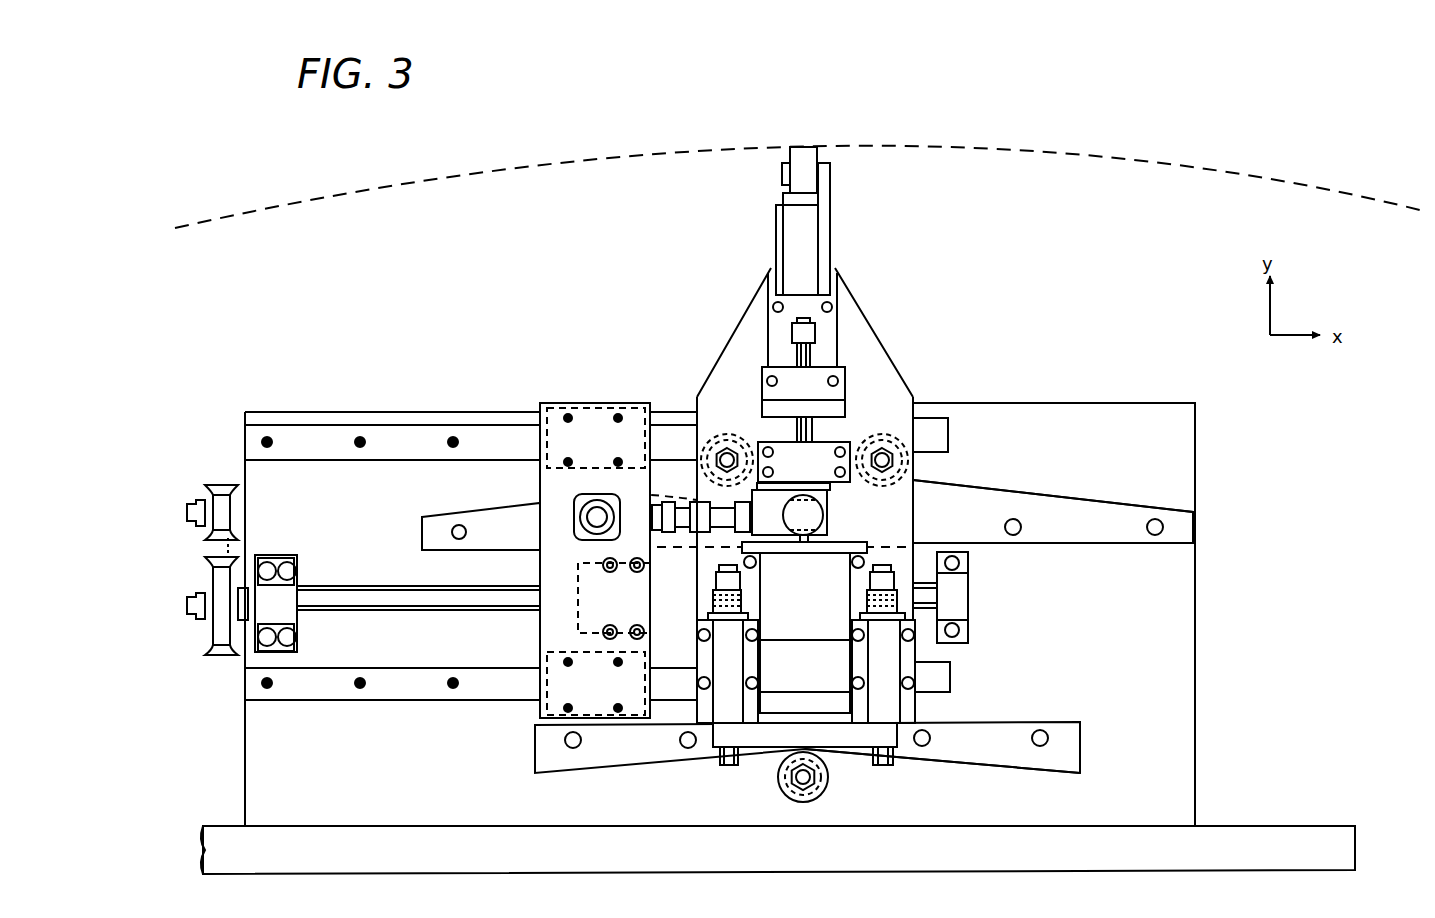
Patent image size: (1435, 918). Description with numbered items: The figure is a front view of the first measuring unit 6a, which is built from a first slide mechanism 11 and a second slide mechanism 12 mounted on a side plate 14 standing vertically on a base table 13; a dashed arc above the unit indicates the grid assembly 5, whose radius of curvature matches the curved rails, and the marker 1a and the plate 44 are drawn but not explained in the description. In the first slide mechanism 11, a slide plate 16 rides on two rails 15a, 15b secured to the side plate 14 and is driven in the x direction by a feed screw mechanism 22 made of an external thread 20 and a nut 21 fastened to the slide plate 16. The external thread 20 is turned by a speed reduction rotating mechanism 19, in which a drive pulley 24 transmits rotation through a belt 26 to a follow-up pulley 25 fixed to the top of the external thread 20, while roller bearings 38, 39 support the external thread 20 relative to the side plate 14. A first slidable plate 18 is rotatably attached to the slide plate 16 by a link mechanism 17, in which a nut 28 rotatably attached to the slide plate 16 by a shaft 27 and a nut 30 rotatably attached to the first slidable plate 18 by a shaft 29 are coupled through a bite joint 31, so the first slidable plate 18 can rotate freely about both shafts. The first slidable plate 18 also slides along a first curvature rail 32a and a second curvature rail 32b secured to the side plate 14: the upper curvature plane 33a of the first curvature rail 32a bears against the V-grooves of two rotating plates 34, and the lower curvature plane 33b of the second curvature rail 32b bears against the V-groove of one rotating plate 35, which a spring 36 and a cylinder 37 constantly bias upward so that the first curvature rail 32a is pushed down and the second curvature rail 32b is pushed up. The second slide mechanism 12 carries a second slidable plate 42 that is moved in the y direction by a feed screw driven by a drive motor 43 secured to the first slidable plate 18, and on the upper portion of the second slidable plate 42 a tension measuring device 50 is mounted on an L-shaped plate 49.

The chuck center 1a is at (835, 148).
The grid assembly 5 is at (1098, 150).
The first measuring unit 6a is at (1200, 241).
The first slide mechanism 11 is at (432, 395).
The second slide mechanism 12 is at (866, 384).
The base table 13 is at (1283, 834).
The side plate 14 is at (1198, 690).
The rail 15a is at (318, 438).
The rail 15b is at (308, 690).
The slide plate 16 is at (533, 448).
The link mechanism 17 is at (677, 492).
The first slidable plate 18 is at (905, 396).
The speed reduction rotating mechanism 19 is at (183, 552).
The external thread 20 is at (372, 600).
The nut 21 is at (615, 602).
The feed screw mechanism 22 is at (428, 640).
The drive pulley 24 is at (222, 650).
The follow-up pulley 25 is at (218, 490).
The belt 26 is at (205, 550).
The shaft 27 is at (545, 517).
The nut 28 is at (622, 506).
The shaft 29 is at (828, 515).
The nut 30 is at (748, 432).
The bite joint 31 is at (700, 530).
The first curvature rail 32a is at (1063, 505).
The second curvature rail 32b is at (1010, 728).
The curvature plane 33a is at (995, 485).
The curvature plane 33b is at (988, 764).
The rotating plate 34 is at (714, 445).
The rotating plate 35 is at (826, 772).
The spring 36 is at (713, 602).
The cylinder 37 is at (722, 696).
The roller bearing 38 is at (272, 590).
The roller bearing 39 is at (955, 602).
The second slidable plate 42 is at (826, 320).
The drive motor 43 is at (798, 628).
The plate 44 is at (803, 555).
The L-shaped plate 49 is at (830, 212).
The tension measuring device 50 is at (775, 186).